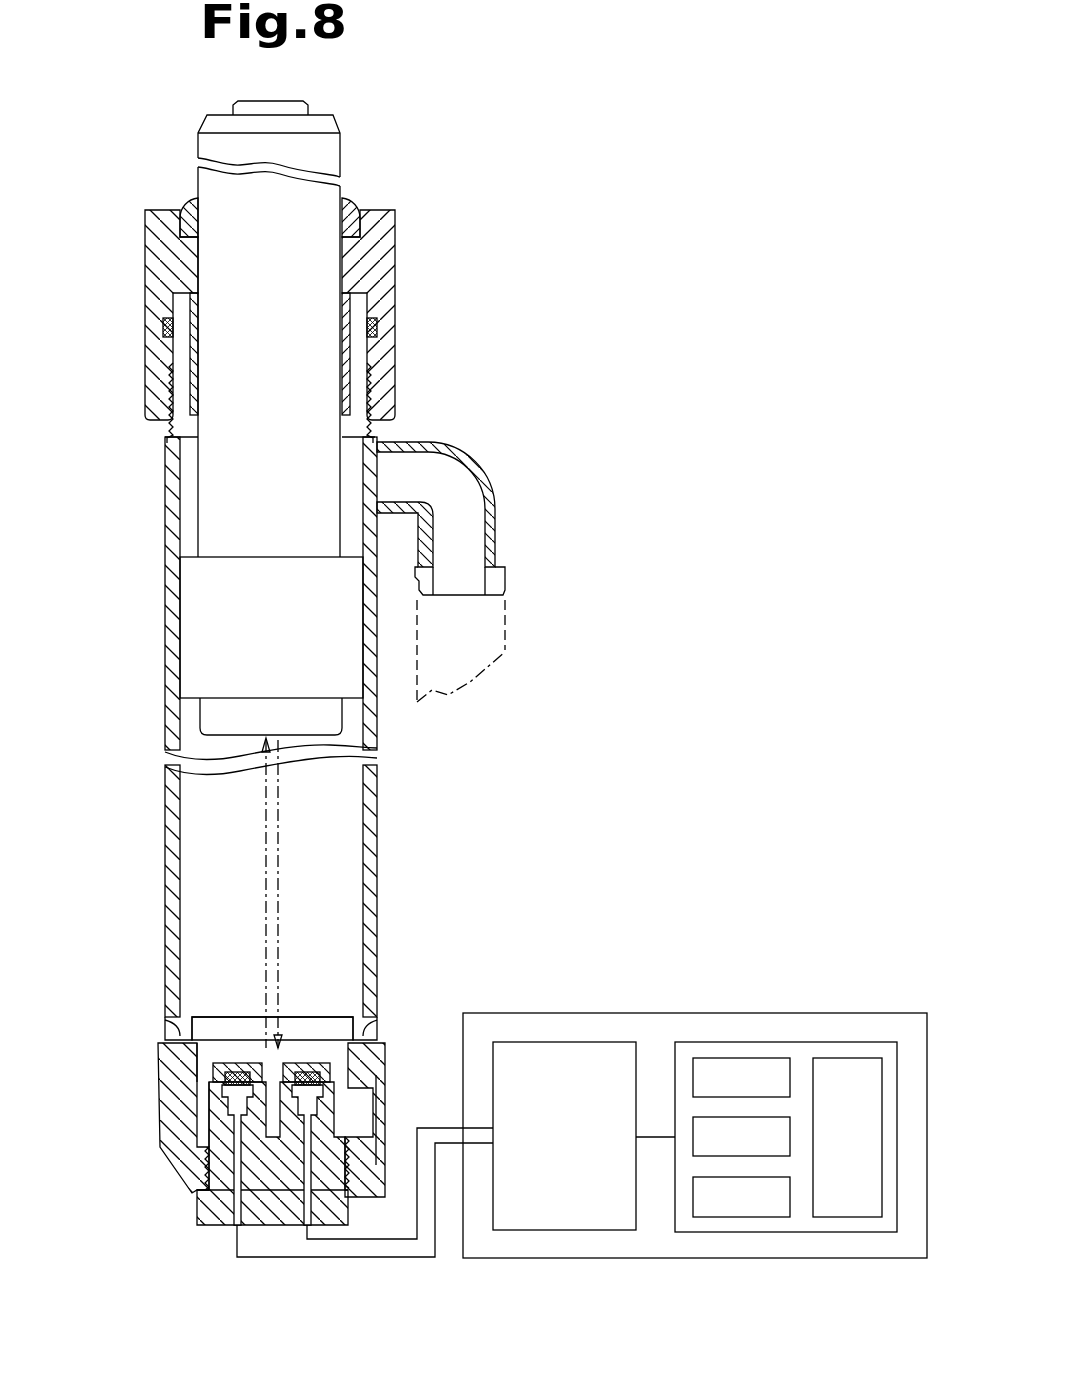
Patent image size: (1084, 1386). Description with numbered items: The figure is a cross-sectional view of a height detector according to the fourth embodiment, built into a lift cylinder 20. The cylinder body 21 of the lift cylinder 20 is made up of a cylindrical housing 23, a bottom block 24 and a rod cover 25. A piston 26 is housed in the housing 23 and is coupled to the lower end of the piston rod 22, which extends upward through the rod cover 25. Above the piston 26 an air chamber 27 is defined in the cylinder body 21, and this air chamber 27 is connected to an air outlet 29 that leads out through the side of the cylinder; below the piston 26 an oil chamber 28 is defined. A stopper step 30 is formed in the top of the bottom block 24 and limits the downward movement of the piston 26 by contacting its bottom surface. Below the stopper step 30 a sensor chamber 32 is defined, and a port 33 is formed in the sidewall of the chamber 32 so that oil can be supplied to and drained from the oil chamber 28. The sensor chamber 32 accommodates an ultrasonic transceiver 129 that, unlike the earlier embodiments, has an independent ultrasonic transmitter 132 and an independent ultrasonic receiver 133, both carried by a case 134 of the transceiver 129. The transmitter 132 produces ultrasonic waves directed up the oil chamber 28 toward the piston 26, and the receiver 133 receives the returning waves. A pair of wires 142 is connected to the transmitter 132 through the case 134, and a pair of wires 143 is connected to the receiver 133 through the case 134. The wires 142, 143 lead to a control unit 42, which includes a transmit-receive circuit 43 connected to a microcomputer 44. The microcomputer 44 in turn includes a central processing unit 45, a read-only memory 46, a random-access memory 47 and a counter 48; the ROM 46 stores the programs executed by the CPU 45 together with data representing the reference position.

The lift cylinder 20 is at (488, 220).
The cylinder body 21 is at (377, 860).
The piston rod 22 is at (342, 125).
The cylindrical housing 23 is at (372, 800).
The bottom block 24 is at (165, 1115).
The rod cover 25 is at (153, 275).
The piston 26 is at (193, 593).
The air chamber 27 is at (180, 470).
The oil chamber 28 is at (338, 828).
The air outlet 29 is at (368, 453).
The stopper step 30 is at (200, 1017).
The sensor chamber 32 is at (203, 1072).
The port 33 is at (360, 1097).
The control unit 42 is at (862, 1013).
The transmit-receive circuit 43 is at (530, 1042).
The microcomputer 44 is at (743, 1042).
The central processing unit 45 is at (882, 1105).
The read-only memory 46 is at (693, 1075).
The random-access memory 47 is at (693, 1143).
The counter 48 is at (743, 1217).
The ultrasonic transceiver 129 is at (217, 975).
The ultrasonic transmitter 132 is at (243, 1062).
The ultrasonic receiver 133 is at (317, 1062).
The case 134 is at (195, 1210).
The wires 142 is at (327, 1257).
The wires 143 is at (385, 1240).